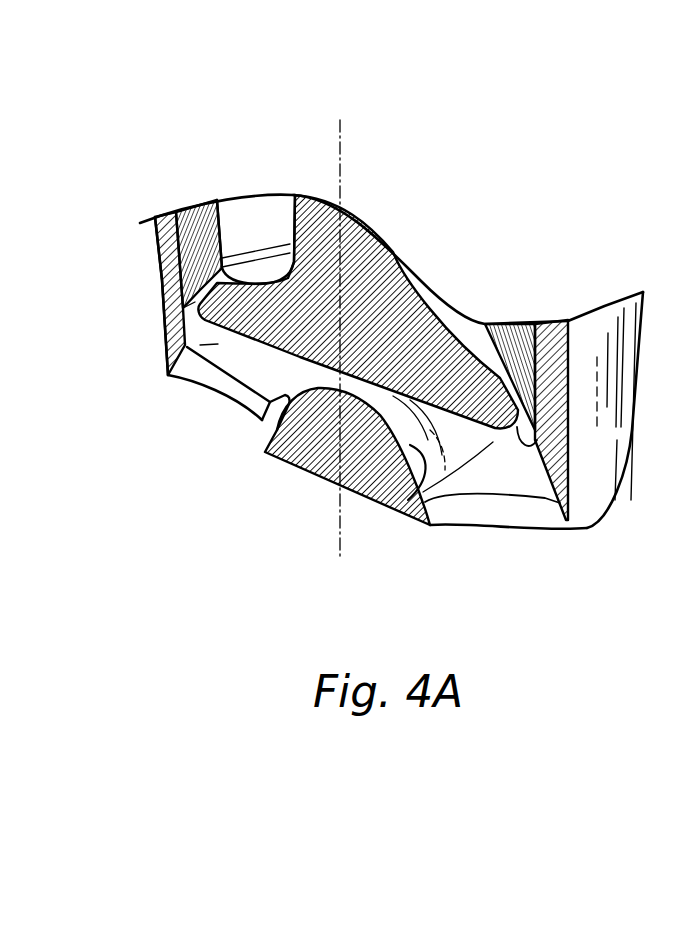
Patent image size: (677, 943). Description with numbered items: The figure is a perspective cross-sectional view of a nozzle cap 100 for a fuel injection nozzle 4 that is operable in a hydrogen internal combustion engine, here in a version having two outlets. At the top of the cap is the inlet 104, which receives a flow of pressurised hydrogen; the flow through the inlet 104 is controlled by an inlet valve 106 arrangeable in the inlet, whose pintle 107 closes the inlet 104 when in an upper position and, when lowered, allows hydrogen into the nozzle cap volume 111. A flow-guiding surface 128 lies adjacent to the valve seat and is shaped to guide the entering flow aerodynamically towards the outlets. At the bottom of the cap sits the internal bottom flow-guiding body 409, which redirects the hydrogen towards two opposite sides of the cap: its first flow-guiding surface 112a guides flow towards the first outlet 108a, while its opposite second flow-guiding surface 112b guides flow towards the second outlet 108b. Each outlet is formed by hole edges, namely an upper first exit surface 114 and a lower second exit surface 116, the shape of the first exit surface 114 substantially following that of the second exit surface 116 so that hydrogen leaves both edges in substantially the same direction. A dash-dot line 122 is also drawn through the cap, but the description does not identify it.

The fuel injection nozzle 4 is at (512, 130).
The nozzle cap 100 is at (265, 504).
The inlet 104 is at (229, 277).
The inlet valve 106 is at (421, 312).
The pintle 107 is at (330, 243).
The first outlet 108a is at (522, 541).
The second outlet 108b is at (224, 348).
The nozzle cap volume 111 is at (300, 389).
The first flow-guiding surface 112a is at (408, 500).
The second flow-guiding surface 112b is at (262, 420).
The first exit surface 114 is at (542, 482).
The second exit surface 116 is at (432, 523).
The central axis 122 is at (341, 178).
The flow-guiding surface 128 is at (572, 330).
The internal bottom flow-guiding body 409 is at (330, 452).